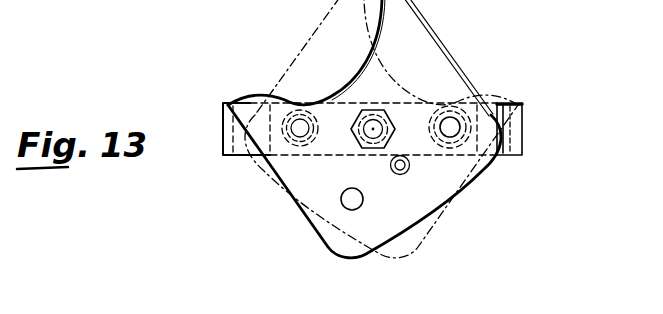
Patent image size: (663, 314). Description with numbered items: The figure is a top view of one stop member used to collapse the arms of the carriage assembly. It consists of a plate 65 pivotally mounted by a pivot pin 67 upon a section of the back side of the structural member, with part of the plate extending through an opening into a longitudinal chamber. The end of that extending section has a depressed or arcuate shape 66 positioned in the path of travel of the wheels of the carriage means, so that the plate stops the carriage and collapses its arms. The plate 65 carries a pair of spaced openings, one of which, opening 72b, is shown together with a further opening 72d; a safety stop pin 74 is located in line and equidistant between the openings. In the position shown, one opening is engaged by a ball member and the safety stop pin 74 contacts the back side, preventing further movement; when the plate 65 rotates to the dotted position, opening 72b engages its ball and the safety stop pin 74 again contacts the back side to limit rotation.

The plate 65 is at (373, 131).
The depressed or arcuate shape 66 is at (346, 93).
The pivot pin 67 is at (370, 149).
The opening 72b is at (340, 200).
The hole 72d is at (458, 117).
The safety stop pin 74 is at (400, 175).